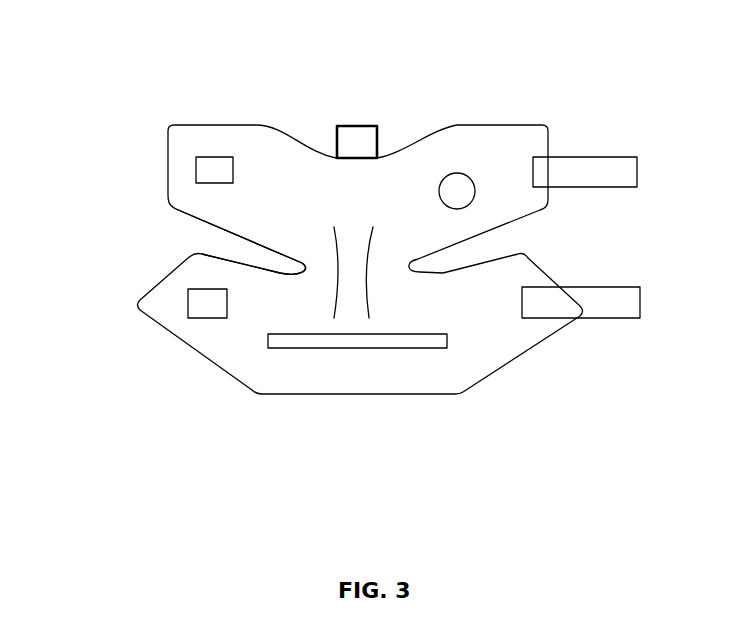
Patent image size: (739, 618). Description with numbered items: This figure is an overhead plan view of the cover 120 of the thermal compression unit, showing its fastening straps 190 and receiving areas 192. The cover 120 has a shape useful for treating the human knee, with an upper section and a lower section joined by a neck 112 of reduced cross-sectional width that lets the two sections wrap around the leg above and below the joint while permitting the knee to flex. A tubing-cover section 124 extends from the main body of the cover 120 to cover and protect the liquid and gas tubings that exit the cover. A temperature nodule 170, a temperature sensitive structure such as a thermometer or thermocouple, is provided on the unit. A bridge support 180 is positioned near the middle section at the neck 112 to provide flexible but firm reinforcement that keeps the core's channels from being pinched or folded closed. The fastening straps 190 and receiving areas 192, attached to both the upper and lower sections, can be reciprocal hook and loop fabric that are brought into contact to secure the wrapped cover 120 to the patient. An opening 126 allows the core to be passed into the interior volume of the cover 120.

The cover 120 is at (447, 87).
The neck 112 is at (292, 262).
The tubing-cover section 124 is at (328, 122).
The temperature nodule 170 is at (465, 195).
The bridge support 180 is at (372, 290).
The opening 126 is at (390, 357).
The fastening straps 190 is at (608, 150).
The receiving areas 192 is at (187, 172).